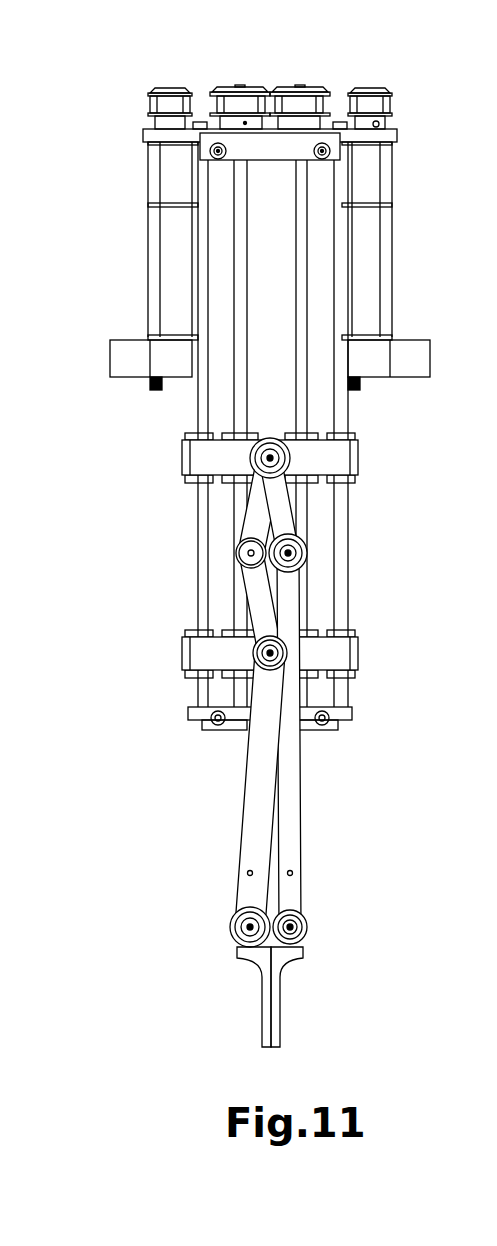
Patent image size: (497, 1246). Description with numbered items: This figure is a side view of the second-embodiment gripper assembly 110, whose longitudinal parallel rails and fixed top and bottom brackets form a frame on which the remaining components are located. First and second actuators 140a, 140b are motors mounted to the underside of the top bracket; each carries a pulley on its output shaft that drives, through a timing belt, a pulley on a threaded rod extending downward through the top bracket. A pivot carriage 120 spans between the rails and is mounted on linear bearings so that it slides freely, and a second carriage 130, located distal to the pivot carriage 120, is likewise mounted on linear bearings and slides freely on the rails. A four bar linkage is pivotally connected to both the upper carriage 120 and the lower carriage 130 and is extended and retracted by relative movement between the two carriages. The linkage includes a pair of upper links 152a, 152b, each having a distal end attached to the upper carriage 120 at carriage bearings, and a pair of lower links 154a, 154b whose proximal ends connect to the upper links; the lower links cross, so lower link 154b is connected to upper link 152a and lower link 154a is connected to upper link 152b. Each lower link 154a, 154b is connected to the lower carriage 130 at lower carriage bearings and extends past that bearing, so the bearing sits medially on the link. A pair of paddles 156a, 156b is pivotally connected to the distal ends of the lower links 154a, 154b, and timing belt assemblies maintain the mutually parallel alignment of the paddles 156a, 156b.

The gripper assembly 110 is at (282, 26).
The pivot carriage 120 is at (214, 453).
The second carriage 130 is at (214, 653).
The first actuator 140a is at (177, 258).
The second actuator 140b is at (380, 243).
The upper link 152a is at (262, 513).
The upper link 152b is at (287, 520).
The lower link 154a is at (256, 818).
The lower link 154b is at (285, 847).
The paddle 156a is at (271, 1008).
The paddle 156b is at (281, 1008).